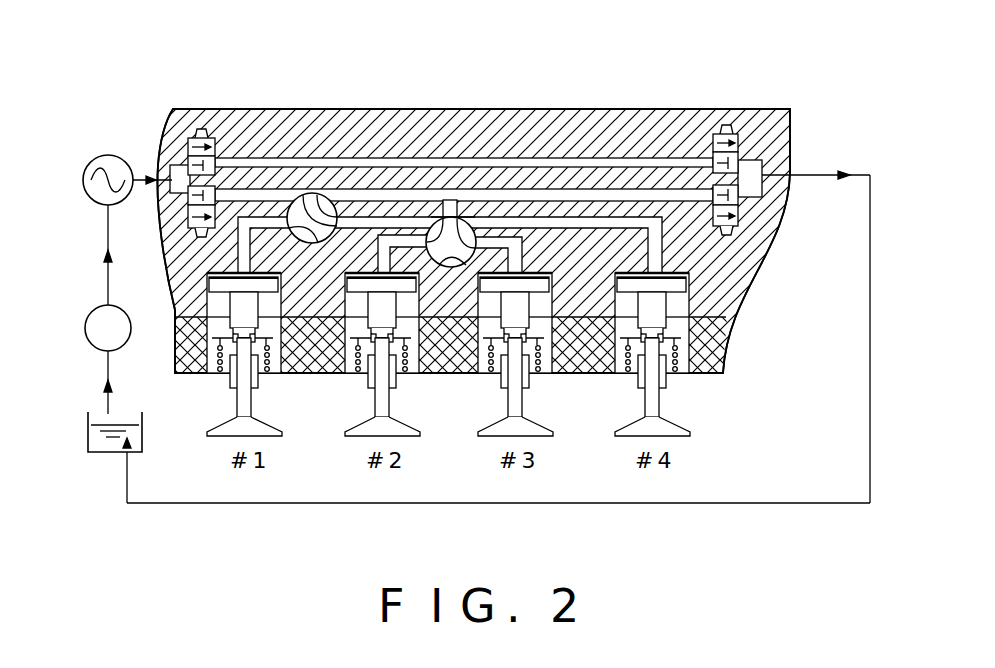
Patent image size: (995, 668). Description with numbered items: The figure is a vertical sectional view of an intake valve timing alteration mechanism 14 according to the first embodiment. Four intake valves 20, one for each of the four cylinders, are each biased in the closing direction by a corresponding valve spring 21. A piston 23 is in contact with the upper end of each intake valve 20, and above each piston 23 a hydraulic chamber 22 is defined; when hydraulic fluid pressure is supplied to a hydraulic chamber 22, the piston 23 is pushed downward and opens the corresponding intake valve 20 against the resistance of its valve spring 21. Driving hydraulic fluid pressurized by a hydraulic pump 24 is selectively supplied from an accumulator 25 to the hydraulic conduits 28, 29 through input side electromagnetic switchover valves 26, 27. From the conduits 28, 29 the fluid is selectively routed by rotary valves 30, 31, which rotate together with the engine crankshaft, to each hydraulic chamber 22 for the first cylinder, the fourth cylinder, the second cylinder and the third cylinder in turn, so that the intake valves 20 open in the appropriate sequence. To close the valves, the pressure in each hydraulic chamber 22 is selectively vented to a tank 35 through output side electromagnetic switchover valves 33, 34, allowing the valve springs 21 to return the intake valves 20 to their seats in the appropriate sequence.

The intake valve timing alteration mechanism 14 is at (786, 100).
The intake valve 20 is at (665, 420).
The valve spring 21 is at (688, 358).
The hydraulic chamber 22 is at (692, 284).
The piston 23 is at (692, 290).
The hydraulic pump 24 is at (92, 312).
The accumulator 25 is at (118, 156).
The input side electromagnetic switchover valve 26 is at (218, 110).
The input side electromagnetic switchover valve 27 is at (190, 222).
The hydraulic conduit 28 is at (587, 163).
The hydraulic conduit 29 is at (560, 193).
The rotary valve 30 is at (337, 192).
The rotary valve 31 is at (463, 217).
The output side electromagnetic switchover valve 33 is at (702, 110).
The output side electromagnetic switchover valve 34 is at (742, 232).
The tank 35 is at (90, 440).